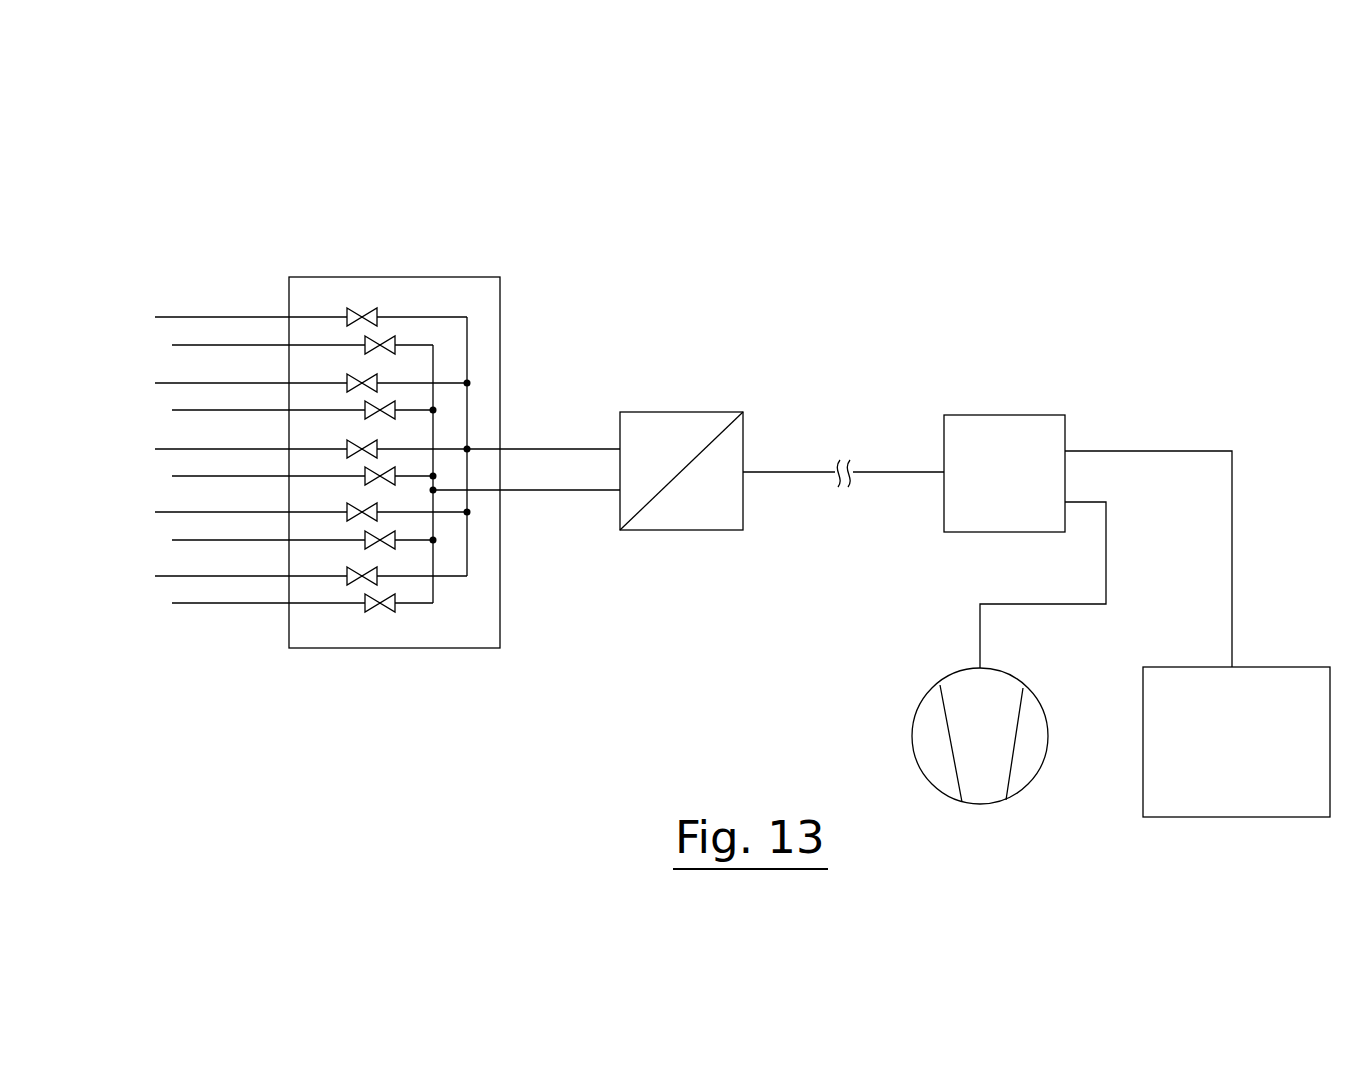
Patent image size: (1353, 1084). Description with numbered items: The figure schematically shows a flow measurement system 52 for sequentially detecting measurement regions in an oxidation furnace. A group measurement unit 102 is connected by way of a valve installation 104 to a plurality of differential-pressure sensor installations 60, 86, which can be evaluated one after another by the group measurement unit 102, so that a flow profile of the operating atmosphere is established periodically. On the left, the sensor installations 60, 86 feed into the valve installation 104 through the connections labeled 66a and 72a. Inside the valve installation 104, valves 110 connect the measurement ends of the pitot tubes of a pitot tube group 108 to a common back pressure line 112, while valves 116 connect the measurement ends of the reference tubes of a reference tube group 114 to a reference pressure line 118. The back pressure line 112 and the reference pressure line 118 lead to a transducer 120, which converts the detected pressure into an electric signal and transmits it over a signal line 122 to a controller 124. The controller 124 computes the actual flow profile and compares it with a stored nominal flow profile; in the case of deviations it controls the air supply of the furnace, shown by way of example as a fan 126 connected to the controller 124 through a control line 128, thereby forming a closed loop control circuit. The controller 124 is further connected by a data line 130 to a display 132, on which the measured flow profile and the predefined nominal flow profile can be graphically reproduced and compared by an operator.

The flow measurement system 52 is at (890, 222).
The group measurement unit 102 is at (586, 232).
The valve installation 104 is at (402, 273).
The pitot tube group 108 is at (342, 301).
The valves 110 is at (379, 316).
The back pressure line 112 is at (572, 449).
The reference tube group 114 is at (236, 313).
The valves 116 is at (398, 340).
The reference pressure line 118 is at (565, 492).
The transducer 120 is at (668, 437).
The signal line 122 is at (785, 471).
The controller 124 is at (995, 437).
The fan 126 is at (928, 747).
The control line 128 is at (980, 637).
The data line 130 is at (1232, 505).
The display 132 is at (1245, 790).
The differential-pressure sensor installation 60 is at (265, 431).
The differential-pressure sensor installation 86 is at (192, 323).
The first gas line 66a is at (347, 318).
The second gas line 72a is at (365, 345).